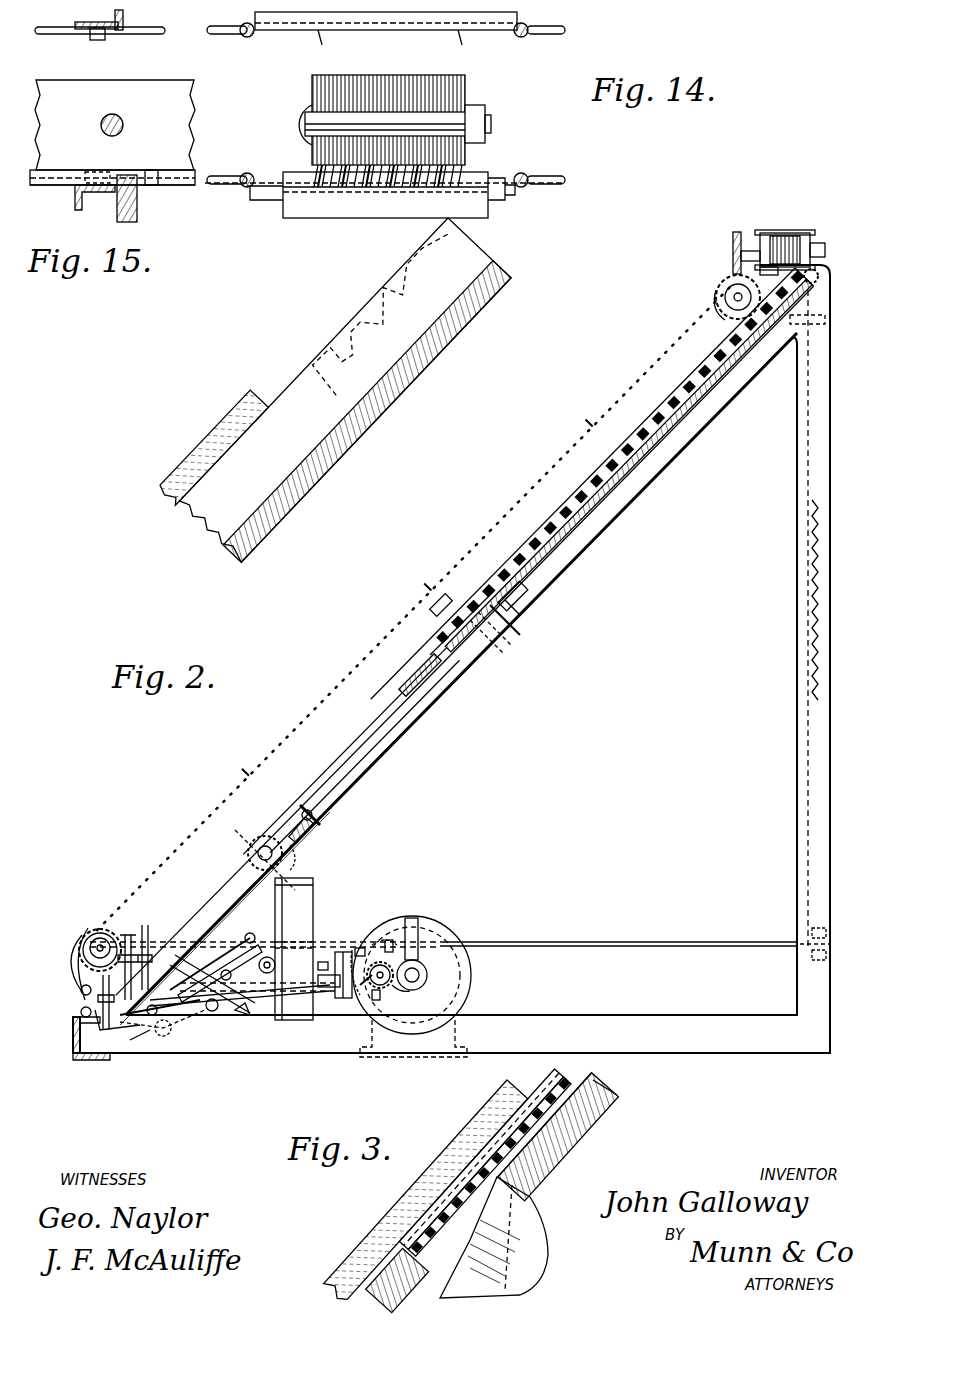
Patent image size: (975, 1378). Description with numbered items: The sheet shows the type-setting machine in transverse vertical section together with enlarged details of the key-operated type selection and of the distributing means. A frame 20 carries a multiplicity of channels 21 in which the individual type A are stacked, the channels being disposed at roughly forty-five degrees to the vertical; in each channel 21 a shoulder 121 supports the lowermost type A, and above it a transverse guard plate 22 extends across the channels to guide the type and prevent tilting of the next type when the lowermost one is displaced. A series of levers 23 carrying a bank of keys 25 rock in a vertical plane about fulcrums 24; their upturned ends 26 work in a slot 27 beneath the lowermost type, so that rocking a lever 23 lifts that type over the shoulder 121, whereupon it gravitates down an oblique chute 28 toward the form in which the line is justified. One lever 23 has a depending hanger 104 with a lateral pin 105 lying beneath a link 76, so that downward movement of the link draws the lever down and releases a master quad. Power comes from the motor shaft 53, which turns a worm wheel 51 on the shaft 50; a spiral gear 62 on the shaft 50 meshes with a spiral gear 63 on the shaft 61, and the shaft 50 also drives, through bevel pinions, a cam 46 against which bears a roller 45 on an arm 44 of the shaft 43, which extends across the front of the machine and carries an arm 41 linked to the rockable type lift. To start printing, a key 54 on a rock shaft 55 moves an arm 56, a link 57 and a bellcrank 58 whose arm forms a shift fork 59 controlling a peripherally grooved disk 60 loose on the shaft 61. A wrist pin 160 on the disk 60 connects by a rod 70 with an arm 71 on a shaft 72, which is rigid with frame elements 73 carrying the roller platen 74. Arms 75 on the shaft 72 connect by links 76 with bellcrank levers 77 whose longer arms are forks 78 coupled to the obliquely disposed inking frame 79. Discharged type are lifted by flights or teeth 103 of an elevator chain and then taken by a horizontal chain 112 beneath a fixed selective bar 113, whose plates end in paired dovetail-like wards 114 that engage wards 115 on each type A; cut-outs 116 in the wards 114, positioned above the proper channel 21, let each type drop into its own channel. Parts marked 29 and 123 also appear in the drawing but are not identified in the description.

In FIG. 15, the frame 20 is at (77, 200).
In FIG. 14, the frame 20 is at (253, 200).
In FIG. 2, the frame 20 is at (830, 452).
In FIG. 2, the channels 21 is at (598, 540).
In FIG. 3, the channels 21 is at (577, 1133).
In FIG. 2, the transverse guard plate 22 is at (502, 563).
In FIG. 3, the transverse guard plate 22 is at (487, 1120).
In FIG. 2, the levers 23 is at (347, 790).
In FIG. 3, the levers 23 is at (540, 1290).
In FIG. 2, the fulcrum 24 is at (323, 815).
In FIG. 2, the bank of keys 25 is at (140, 938).
In FIG. 2, the upturned ends 26 is at (523, 612).
In FIG. 3, the upturned ends 26 is at (540, 1223).
In FIG. 2, the slot 27 is at (520, 602).
In FIG. 2, the oblique chute 28 is at (400, 677).
In FIG. 2, the strip 29 is at (490, 587).
In FIG. 3, the strip 29 is at (367, 1220).
In FIG. 2, the arm 41 is at (85, 992).
In FIG. 2, the shaft 43 is at (85, 1012).
In FIG. 2, the arm 44 is at (78, 965).
In FIG. 2, the roller 45 is at (83, 950).
In FIG. 2, the cam 46 is at (85, 938).
In FIG. 2, the shaft 50 is at (533, 942).
In FIG. 2, the worm wheel 51 is at (417, 927).
In FIG. 2, the motor shaft 53 is at (418, 977).
In FIG. 2, the key 54 is at (140, 1040).
In FIG. 2, the rock shaft 55 is at (173, 1043).
In FIG. 2, the arm 56 is at (172, 1032).
In FIG. 2, the link 57 is at (167, 1013).
In FIG. 2, the bellcrank 58 is at (332, 953).
In FIG. 2, the shift fork 59 is at (355, 943).
In FIG. 2, the peripherally grooved disk 60 is at (403, 953).
In FIG. 2, the shaft 61 is at (380, 993).
In FIG. 2, the spiral gear 62 is at (388, 950).
In FIG. 2, the spiral gear 63 is at (397, 993).
In FIG. 2, the rod 70 is at (322, 987).
In FIG. 2, the arm 71 is at (237, 983).
In FIG. 2, the shaft 72 is at (277, 963).
In FIG. 2, the frame elements 73 is at (275, 913).
In FIG. 2, the platen 74 is at (260, 833).
In FIG. 2, the arms 75 is at (247, 935).
In FIG. 2, the links 76 is at (243, 944).
In FIG. 2, the bellcrank levers 77 is at (117, 1020).
In FIG. 2, the forks 78 is at (240, 1022).
In FIG. 2, the obliquely disposed frame 79 is at (211, 1020).
In FIG. 2, the flights or teeth 103 is at (223, 797).
In FIG. 2, the depending hanger 104 is at (210, 900).
In FIG. 2, the lateral pin 105 is at (265, 1018).
In FIG. 15, the horizontal chain 112 is at (143, 29).
In FIG. 14, the horizontal chain 112 is at (540, 30).
In FIG. 15, the fixed selective bar 113 is at (115, 125).
In FIG. 14, the fixed selective bar 113 is at (467, 83).
In FIG. 15, the wards 114 is at (43, 184).
In FIG. 14, the wards 114 is at (310, 180).
In FIG. 14, the wards 115 is at (347, 182).
In FIG. 15, the cut-outs 116 is at (163, 181).
In FIG. 2, the shoulder 121 is at (440, 610).
In FIG. 3, the shoulder 121 is at (408, 1272).
In FIG. 2, the pawl 123 is at (310, 843).
In FIG. 2, the wrist pin 160 is at (370, 993).
In FIG. 15, the type A is at (140, 210).
In FIG. 14, the type A is at (327, 212).
In FIG. 2, the type A is at (490, 617).
In FIG. 3, the type A is at (440, 1173).